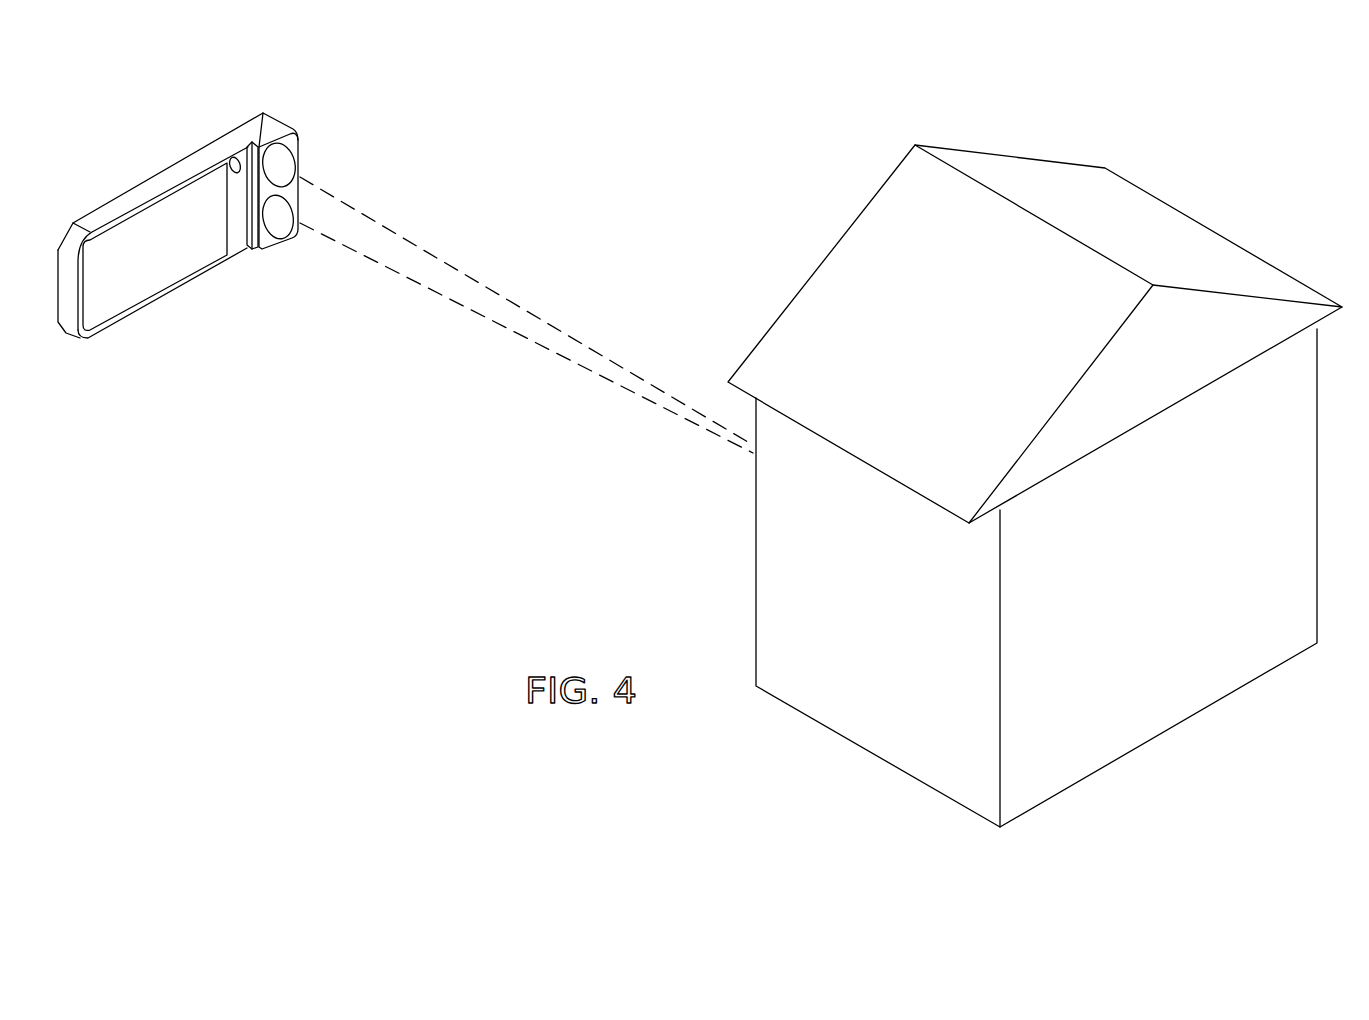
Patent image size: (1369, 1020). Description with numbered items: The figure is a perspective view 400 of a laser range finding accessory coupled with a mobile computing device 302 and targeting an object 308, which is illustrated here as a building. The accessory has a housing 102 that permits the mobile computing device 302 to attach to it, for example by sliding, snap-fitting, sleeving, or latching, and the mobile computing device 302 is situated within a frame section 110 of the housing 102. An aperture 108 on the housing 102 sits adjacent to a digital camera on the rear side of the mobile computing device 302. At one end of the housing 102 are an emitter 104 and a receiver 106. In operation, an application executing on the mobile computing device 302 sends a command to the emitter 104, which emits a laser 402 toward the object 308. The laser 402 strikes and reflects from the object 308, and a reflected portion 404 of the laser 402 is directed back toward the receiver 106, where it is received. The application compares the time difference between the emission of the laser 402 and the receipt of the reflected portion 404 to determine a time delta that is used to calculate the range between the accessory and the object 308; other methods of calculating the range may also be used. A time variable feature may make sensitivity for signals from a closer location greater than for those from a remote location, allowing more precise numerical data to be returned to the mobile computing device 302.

The perspective view 400 is at (210, 226).
The housing 102 is at (305, 214).
The emitter 104 is at (279, 166).
The receiver 106 is at (280, 216).
The aperture 108 is at (238, 160).
The frame section 110 is at (100, 215).
The mobile computing device 302 is at (112, 298).
The object 308 is at (845, 605).
The laser 402 is at (447, 267).
The reflected portion 404 is at (447, 297).